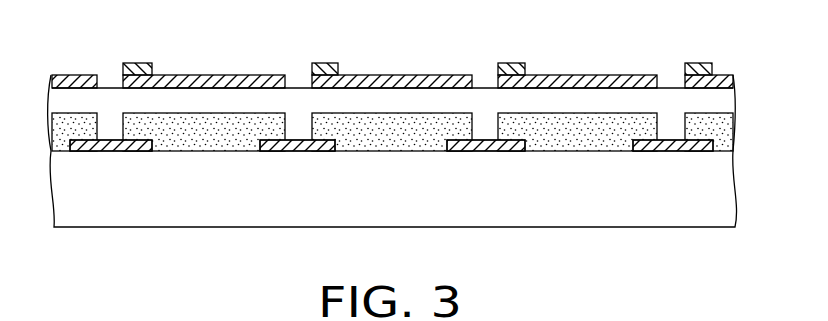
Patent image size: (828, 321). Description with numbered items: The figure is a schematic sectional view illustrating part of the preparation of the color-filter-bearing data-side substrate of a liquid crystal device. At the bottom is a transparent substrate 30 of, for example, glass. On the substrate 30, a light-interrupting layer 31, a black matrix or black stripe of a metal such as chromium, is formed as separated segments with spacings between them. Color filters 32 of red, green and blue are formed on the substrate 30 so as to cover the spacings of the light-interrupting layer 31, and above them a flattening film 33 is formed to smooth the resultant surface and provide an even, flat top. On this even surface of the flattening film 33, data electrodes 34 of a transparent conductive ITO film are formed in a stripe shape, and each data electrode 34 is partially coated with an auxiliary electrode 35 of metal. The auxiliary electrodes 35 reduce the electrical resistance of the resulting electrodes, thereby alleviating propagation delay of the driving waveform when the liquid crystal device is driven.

The transparent substrate 30 is at (212, 208).
The light-interrupting layer 31 is at (297, 151).
The color filters 32 is at (398, 138).
The flattening film 33 is at (483, 96).
The data electrodes 34 is at (428, 75).
The auxiliary electrodes 35 is at (330, 63).